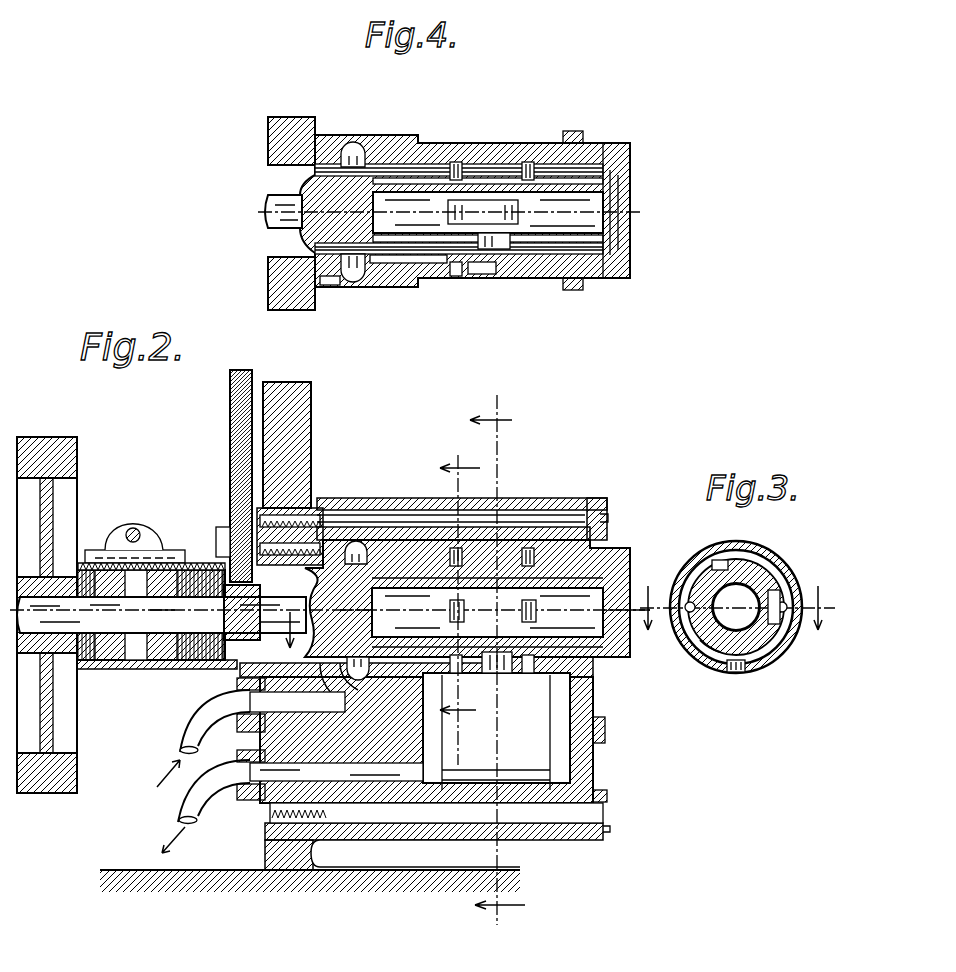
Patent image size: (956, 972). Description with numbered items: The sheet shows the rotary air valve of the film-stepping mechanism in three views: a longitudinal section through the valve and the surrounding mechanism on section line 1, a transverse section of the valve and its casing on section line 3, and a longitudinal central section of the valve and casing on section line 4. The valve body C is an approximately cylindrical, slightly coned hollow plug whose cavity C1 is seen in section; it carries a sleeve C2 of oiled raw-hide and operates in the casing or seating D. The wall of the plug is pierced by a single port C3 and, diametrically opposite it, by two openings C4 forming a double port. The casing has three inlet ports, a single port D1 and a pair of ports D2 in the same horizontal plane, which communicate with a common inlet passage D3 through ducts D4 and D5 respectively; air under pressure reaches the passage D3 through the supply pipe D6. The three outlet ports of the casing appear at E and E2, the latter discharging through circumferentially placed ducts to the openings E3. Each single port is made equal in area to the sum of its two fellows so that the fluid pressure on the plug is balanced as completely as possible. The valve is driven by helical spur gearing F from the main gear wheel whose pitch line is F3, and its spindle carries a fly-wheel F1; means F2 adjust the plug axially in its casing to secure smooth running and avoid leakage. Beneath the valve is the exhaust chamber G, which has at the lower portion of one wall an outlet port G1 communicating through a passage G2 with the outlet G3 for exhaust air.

In FIG. 4, the rotary valve C is at (323, 200).
In FIG. 2, the rotary valve C is at (338, 590).
In FIG. 3, the rotary valve C is at (720, 556).
In FIG. 4, the cavity C1 is at (345, 273).
In FIG. 3, the cavity C1 is at (693, 662).
In FIG. 3, the sleeve C2 is at (760, 570).
In FIG. 4, the single port C3 is at (498, 233).
In FIG. 2, the single port C3 is at (608, 528).
In FIG. 4, the double port openings C4 is at (455, 165).
In FIG. 2, the double port openings C4 is at (606, 673).
In FIG. 3, the double port openings C4 is at (767, 670).
In FIG. 4, the casing D is at (329, 140).
In FIG. 2, the casing D is at (368, 548).
In FIG. 4, the single inlet port D1 is at (497, 243).
In FIG. 4, the pair of inlet ports D2 is at (463, 178).
In FIG. 3, the pair of inlet ports D2 is at (795, 625).
In FIG. 4, the common inlet passage D3 is at (350, 287).
In FIG. 2, the common inlet passage D3 is at (350, 527).
In FIG. 4, the duct D4 is at (396, 164).
In FIG. 2, the duct D4 is at (397, 503).
In FIG. 3, the duct D4 is at (790, 582).
In FIG. 4, the duct D5 is at (407, 263).
In FIG. 3, the duct D5 is at (688, 582).
In FIG. 2, the supply pipe D6 is at (195, 727).
In FIG. 4, the outlet port E is at (483, 274).
In FIG. 2, the outlet port E is at (500, 676).
In FIG. 2, the outlet ports E2 is at (528, 556).
In FIG. 4, the openings E3 is at (452, 277).
In FIG. 2, the openings E3 is at (536, 676).
In FIG. 3, the openings E3 is at (736, 674).
In FIG. 2, the helical spur gearing F is at (230, 512).
In FIG. 2, the fly-wheel F1 is at (45, 438).
In FIG. 2, the adjusting means F2 is at (158, 560).
In FIG. 2, the main gear wheel pitch line F3 is at (229, 412).
In FIG. 2, the exhaust chamber G is at (542, 757).
In FIG. 2, the outlet port G1 is at (378, 776).
In FIG. 2, the passage G2 is at (293, 777).
In FIG. 2, the outlet G3 is at (182, 803).
In FIG. 2, the section line 1- 1 is at (497, 664).
In FIG. 2, the section line 3- 3 is at (460, 598).
In FIG. 2, the section line 4- 4 is at (297, 638).
In FIG. 3, the section line 4- 4 is at (746, 608).